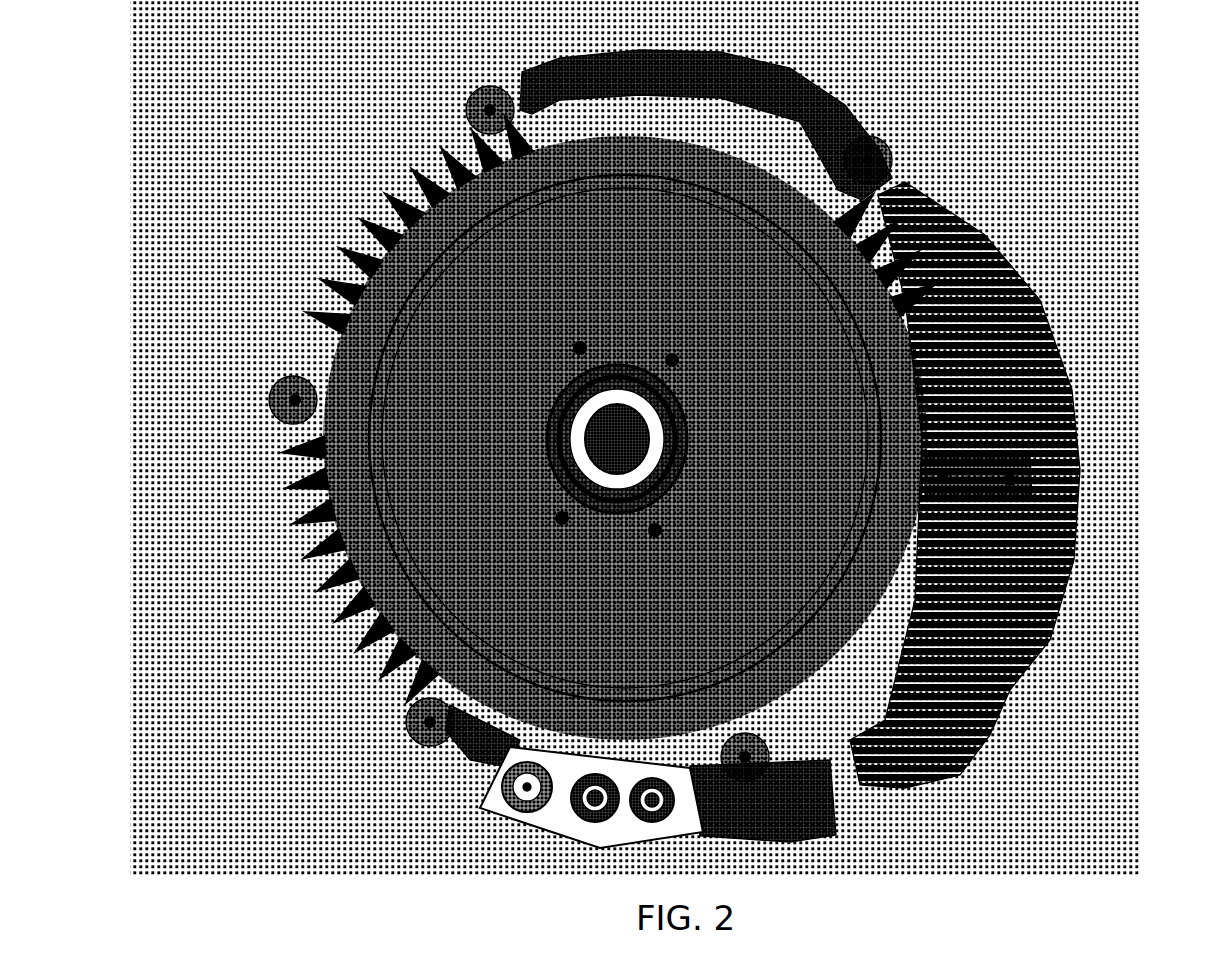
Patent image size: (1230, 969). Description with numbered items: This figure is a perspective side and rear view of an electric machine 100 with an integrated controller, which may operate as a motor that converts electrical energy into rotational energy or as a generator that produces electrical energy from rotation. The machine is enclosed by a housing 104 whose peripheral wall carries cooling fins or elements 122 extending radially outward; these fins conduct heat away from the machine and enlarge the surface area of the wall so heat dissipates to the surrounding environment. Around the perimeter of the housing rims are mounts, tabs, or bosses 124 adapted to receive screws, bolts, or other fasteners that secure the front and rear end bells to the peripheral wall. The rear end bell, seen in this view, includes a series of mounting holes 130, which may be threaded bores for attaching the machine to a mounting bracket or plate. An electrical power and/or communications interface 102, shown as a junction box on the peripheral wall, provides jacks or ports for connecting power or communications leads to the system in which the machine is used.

The electric machine 100 is at (686, 472).
The electrical power and/or communications interface 102 is at (510, 820).
The housing 104 is at (915, 830).
The cooling fins or elements 122 is at (1018, 605).
The mounts, tabs, or bosses 124 is at (1020, 462).
The mounting holes 130 is at (655, 530).